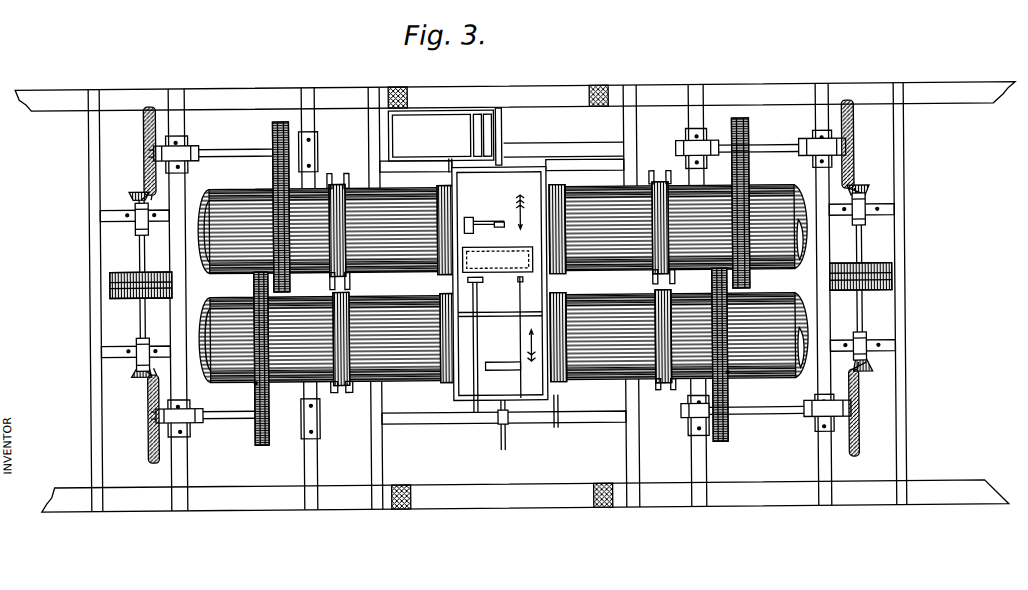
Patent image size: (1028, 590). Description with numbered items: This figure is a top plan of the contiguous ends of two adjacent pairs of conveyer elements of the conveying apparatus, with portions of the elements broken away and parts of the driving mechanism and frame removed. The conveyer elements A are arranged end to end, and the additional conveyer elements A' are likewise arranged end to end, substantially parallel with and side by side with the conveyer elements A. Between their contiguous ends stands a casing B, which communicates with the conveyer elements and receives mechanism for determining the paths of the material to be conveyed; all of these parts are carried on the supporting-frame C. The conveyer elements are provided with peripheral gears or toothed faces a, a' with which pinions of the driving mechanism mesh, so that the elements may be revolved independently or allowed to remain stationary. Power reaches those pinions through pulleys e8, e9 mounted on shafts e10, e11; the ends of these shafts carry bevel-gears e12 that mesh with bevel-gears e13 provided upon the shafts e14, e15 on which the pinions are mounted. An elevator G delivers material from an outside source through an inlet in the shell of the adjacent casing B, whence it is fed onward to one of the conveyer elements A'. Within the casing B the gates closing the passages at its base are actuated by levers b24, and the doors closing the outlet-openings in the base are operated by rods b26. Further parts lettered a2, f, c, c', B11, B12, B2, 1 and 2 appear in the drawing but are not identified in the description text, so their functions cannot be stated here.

The supporting-frame C is at (548, 87).
The peripheral gear or toothed face a is at (483, 221).
The conveyer element A is at (678, 227).
The additional conveyer element A' is at (504, 337).
The roller gear ring a2 is at (340, 183).
The peripheral gear or toothed face a' is at (490, 388).
The bracket f is at (505, 282).
The upper driving gear c is at (505, 205).
The lower driving gear c' is at (491, 368).
The pinion shaft e14 is at (220, 149).
The pinion shaft e15 is at (235, 421).
The bevel-gear e13 is at (146, 140).
The bevel-gear e12 is at (137, 194).
The shaft e11 is at (143, 263).
The shaft e10 is at (858, 249).
The pulley e9 is at (123, 270).
The pulley e8 is at (878, 266).
The elevator G is at (440, 135).
The rod B11 is at (498, 131).
The rod b26 is at (452, 158).
The casing B is at (500, 284).
The latch piece B12 is at (476, 221).
The direction arrow 1 is at (513, 212).
The direction arrow 2 is at (532, 346).
The lever b24 is at (479, 283).
The cross bar B2 is at (500, 379).